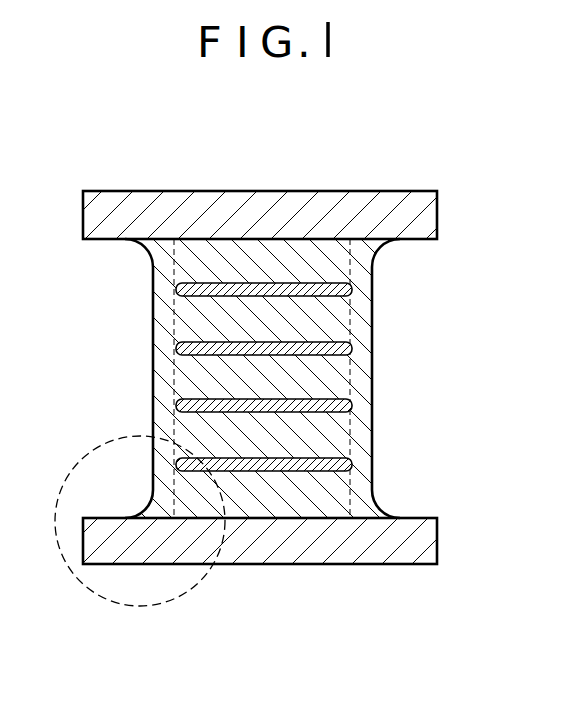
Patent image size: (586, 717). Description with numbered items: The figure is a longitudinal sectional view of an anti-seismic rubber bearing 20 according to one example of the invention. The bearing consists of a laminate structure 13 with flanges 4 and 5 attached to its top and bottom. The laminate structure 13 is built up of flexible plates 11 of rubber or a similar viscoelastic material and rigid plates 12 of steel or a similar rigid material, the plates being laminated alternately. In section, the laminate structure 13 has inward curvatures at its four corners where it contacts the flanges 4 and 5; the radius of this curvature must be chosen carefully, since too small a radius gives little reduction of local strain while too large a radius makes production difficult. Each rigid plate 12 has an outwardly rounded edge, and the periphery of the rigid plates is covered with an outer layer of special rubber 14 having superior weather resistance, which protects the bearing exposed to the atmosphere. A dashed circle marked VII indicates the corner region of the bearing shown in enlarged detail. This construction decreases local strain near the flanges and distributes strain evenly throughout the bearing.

The flange 4 is at (432, 213).
The flange 5 is at (427, 543).
The flexible plate 11 is at (327, 306).
The rigid plate 12 is at (178, 289).
The laminate structure 13 is at (372, 387).
The outer layer of special rubber 14 is at (173, 398).
The anti-seismic rubber bearing 20 is at (293, 377).
The detail region VII is at (107, 600).